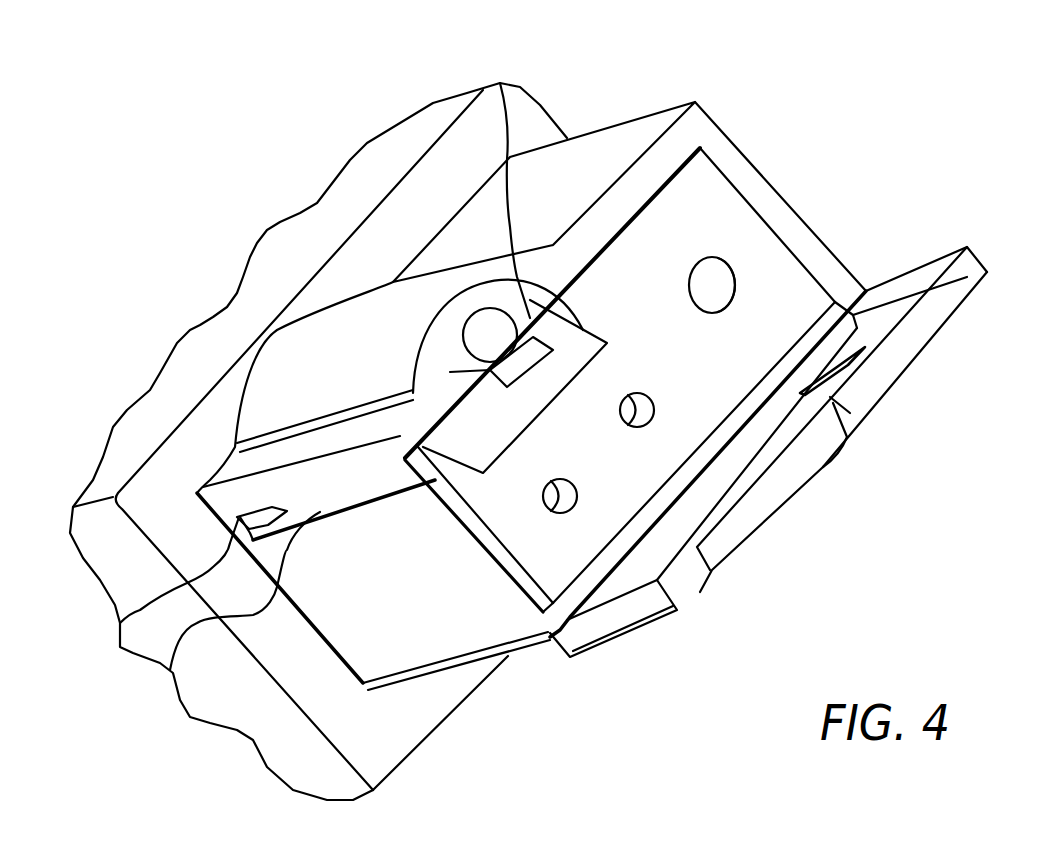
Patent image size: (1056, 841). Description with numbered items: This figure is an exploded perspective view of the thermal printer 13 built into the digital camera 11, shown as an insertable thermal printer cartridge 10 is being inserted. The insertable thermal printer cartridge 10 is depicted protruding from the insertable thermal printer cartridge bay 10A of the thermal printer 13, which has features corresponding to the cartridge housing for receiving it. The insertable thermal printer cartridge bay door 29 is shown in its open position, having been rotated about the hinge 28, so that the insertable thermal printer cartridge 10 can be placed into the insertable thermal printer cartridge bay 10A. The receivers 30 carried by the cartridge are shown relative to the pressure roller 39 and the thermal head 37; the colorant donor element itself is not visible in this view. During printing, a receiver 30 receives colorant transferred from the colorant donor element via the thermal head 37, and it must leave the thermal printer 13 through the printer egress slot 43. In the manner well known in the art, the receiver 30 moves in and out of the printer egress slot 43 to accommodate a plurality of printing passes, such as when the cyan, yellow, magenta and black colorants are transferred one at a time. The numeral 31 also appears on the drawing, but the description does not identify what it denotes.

The insertable thermal printer cartridge 10 is at (754, 128).
The insertable thermal printer cartridge bay 10A is at (792, 245).
The digital camera 11 is at (304, 182).
The thermal printer 13 is at (714, 92).
The hinge 28 is at (548, 637).
The insertable thermal printer cartridge bay door 29 is at (907, 357).
The receivers 30 is at (170, 670).
The grommet boss 31 is at (498, 209).
The thermal head 37 is at (578, 277).
The pressure roller 39 is at (483, 320).
The printer egress slot 43 is at (173, 616).